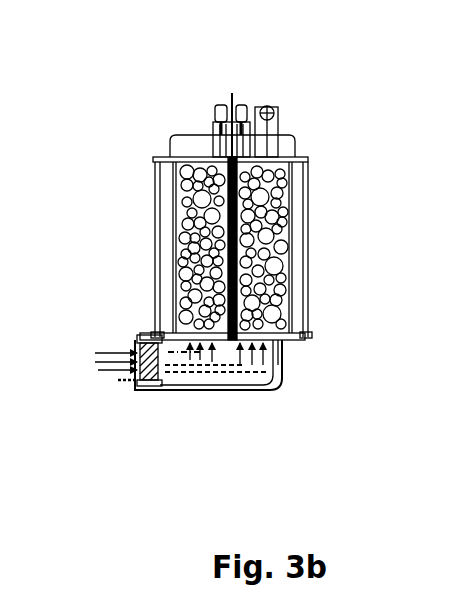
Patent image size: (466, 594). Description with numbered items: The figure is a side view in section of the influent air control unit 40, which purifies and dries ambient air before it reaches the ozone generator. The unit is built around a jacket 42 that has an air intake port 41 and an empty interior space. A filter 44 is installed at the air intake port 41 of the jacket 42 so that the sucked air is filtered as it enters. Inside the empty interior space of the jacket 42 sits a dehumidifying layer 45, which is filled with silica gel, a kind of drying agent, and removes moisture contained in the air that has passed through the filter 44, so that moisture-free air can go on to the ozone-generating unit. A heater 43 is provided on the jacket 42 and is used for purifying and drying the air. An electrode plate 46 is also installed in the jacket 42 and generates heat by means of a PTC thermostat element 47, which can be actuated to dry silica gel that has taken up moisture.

The influent air control unit 40 is at (306, 130).
The air intake port 41 is at (190, 397).
The jacket 42 is at (306, 236).
The heater 43 is at (313, 180).
The filter 44 is at (136, 345).
The dehumidifying layer 45 is at (306, 285).
The electrode plate 46 is at (155, 239).
The PTC thermostat element 47 is at (155, 183).